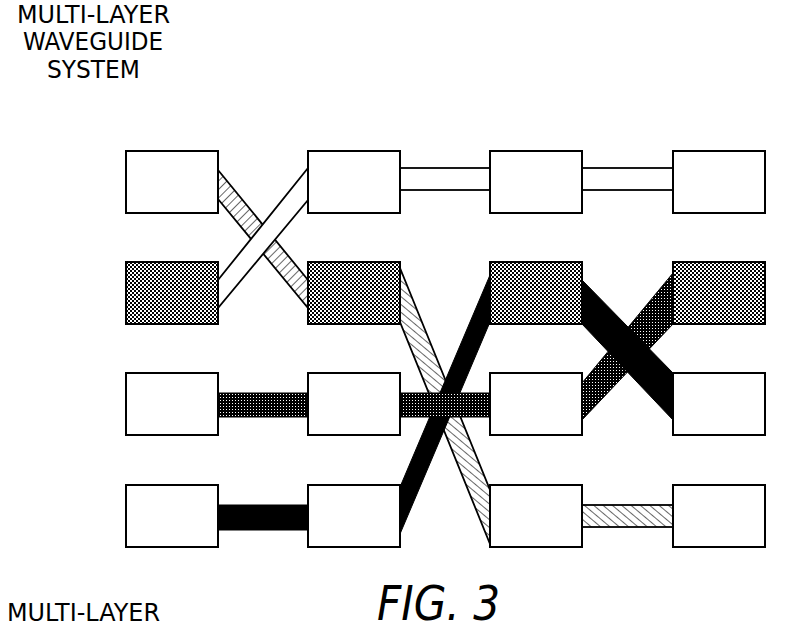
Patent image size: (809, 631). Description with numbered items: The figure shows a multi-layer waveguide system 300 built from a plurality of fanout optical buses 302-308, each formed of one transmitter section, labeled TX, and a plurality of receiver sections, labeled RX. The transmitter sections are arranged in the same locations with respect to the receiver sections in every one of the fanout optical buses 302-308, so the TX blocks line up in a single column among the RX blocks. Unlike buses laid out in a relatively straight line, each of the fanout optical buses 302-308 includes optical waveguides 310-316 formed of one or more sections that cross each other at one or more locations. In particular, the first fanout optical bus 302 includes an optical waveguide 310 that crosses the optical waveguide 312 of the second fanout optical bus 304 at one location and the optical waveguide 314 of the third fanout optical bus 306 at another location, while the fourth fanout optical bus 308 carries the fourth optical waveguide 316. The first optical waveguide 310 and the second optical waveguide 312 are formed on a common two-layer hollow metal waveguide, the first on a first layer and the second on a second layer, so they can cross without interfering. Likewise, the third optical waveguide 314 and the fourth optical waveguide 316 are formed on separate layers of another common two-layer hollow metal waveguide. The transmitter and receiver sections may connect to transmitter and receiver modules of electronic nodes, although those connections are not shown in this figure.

The multi-layer waveguide system 300 is at (150, 125).
The first fanout optical bus 302 is at (118, 179).
The second fanout optical bus 304 is at (118, 292).
The third fanout optical bus 306 is at (118, 403).
The fourth fanout optical bus 308 is at (118, 517).
The first optical waveguide 310 is at (238, 192).
The second optical waveguide 312 is at (440, 168).
The third optical waveguide 314 is at (265, 393).
The fourth optical waveguide 316 is at (265, 505).